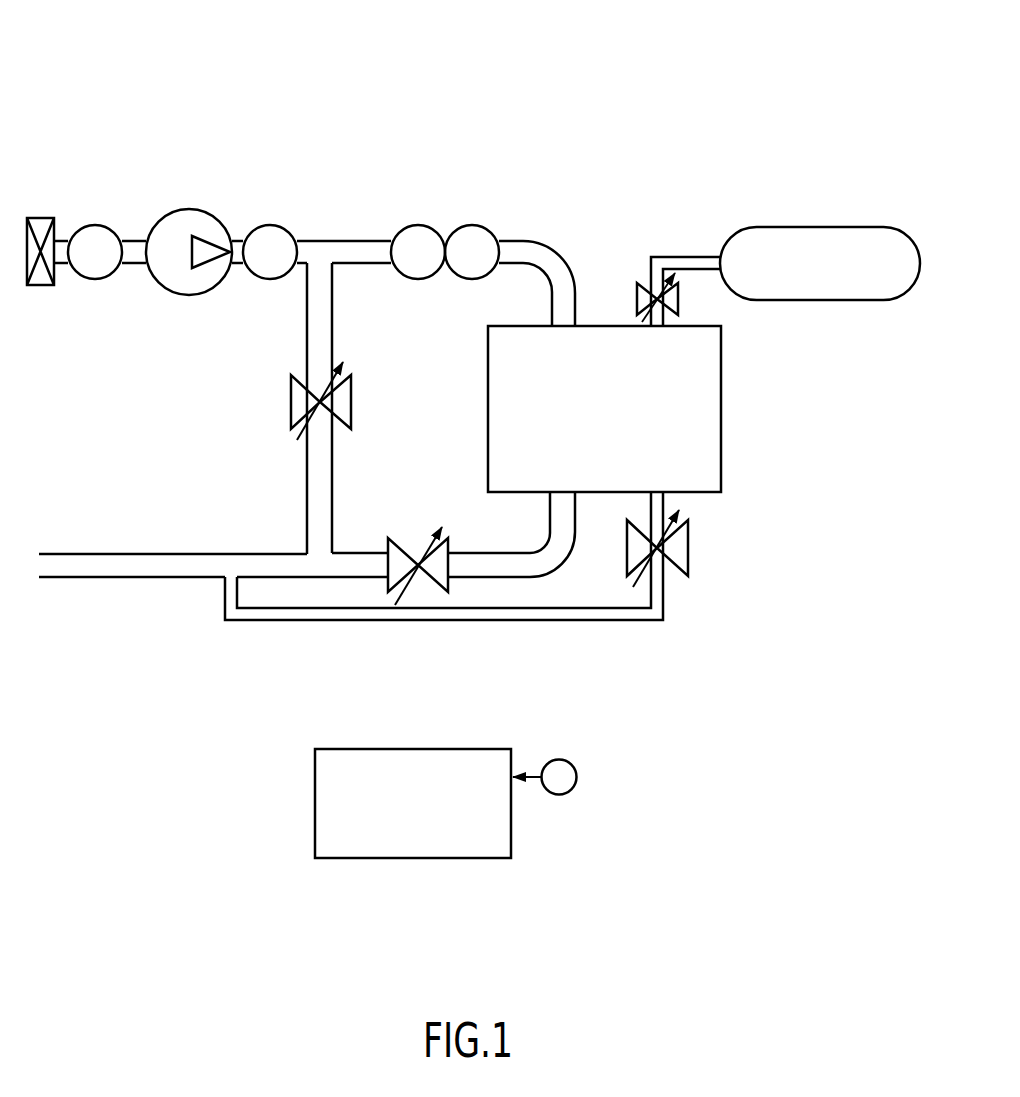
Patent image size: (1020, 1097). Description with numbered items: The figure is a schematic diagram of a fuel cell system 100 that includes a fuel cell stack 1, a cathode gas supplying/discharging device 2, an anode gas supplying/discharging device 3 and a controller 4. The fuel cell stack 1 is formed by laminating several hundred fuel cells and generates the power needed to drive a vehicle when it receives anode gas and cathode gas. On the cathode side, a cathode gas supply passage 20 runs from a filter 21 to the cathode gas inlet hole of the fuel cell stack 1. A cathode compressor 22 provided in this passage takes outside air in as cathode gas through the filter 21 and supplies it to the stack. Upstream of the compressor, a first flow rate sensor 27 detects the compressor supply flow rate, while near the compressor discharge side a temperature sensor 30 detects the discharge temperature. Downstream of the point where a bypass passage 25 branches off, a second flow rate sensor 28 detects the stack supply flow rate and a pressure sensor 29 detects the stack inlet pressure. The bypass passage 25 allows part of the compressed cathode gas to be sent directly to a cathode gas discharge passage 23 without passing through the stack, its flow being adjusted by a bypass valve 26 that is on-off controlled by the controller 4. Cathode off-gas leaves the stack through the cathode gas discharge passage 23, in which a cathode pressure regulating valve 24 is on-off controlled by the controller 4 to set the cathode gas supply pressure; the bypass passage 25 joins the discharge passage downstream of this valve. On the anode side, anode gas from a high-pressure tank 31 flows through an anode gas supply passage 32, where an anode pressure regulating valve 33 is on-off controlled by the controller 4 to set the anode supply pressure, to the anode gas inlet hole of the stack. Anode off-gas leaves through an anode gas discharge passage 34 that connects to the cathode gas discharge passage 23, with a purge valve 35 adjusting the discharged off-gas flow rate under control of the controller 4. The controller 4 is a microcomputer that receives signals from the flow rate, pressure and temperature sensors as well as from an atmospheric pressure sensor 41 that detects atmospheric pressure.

The fuel cell system 100 is at (73, 100).
The fuel cell stack 1 is at (721, 393).
The cathode gas supplying/discharging device 2 is at (283, 201).
The anode gas supplying/discharging device 3 is at (757, 190).
The controller 4 is at (452, 749).
The cathode gas supply passage 20 is at (368, 241).
The filter 21 is at (40, 218).
The cathode compressor 22 is at (189, 209).
The cathode gas discharge passage 23 is at (126, 554).
The cathode pressure regulating valve 24 is at (405, 538).
The bypass passage 25 is at (332, 320).
The bypass valve 26 is at (351, 398).
The first flow rate sensor 27 is at (98, 225).
The second flow rate sensor 28 is at (421, 225).
The pressure sensor 29 is at (476, 225).
The temperature sensor 30 is at (270, 279).
The high-pressure tank 31 is at (856, 227).
The anode gas supply passage 32 is at (689, 257).
The anode pressure regulating valve 33 is at (678, 296).
The anode gas discharge passage 34 is at (620, 622).
The purge valve 35 is at (688, 545).
The atmospheric pressure sensor 41 is at (577, 777).